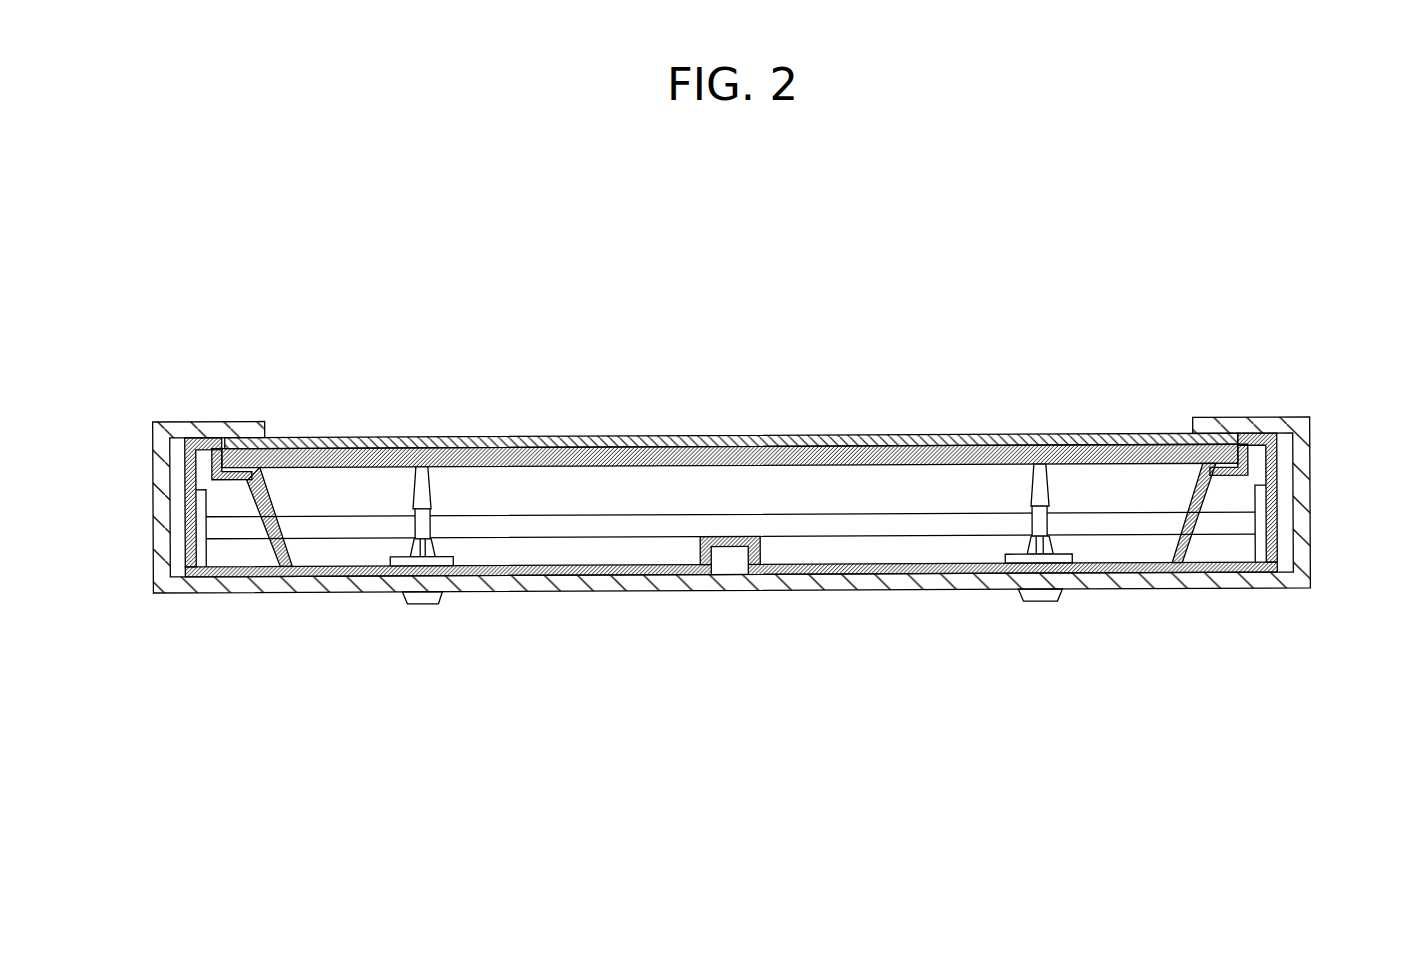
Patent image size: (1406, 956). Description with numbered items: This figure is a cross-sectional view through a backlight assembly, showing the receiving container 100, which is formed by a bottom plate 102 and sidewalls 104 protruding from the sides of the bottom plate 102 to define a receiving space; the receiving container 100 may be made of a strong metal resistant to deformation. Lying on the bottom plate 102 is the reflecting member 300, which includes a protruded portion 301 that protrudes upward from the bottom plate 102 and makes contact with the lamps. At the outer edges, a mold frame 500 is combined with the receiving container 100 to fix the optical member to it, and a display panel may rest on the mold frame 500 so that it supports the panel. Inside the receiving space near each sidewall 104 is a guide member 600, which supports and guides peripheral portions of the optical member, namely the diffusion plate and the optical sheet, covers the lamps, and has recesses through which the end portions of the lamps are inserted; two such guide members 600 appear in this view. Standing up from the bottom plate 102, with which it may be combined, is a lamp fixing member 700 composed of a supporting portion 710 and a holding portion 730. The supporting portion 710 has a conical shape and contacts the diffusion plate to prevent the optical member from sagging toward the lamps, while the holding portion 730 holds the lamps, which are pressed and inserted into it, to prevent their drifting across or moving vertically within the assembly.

The receiving container 100 is at (735, 552).
The bottom plate 102 is at (852, 578).
The sidewall 104 is at (1297, 503).
The reflecting member 300 is at (731, 597).
The protruded portion 301 is at (725, 550).
The mold frame 500 is at (165, 492).
The guide member 600 is at (188, 540).
The lamp fixing member 700 is at (428, 514).
The supporting portion 710 is at (415, 488).
The holding portion 730 is at (415, 527).